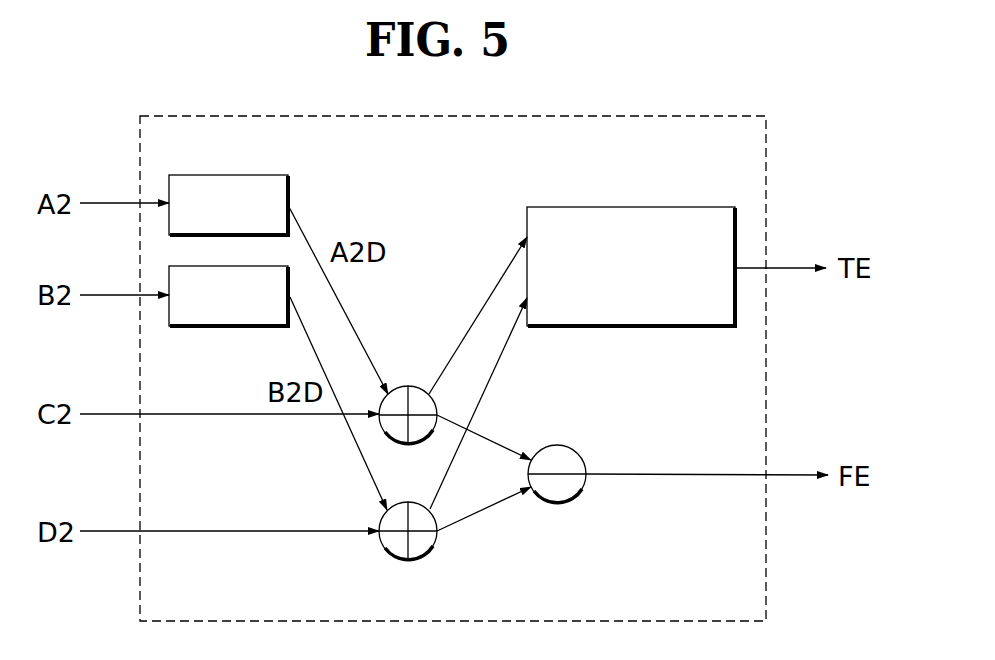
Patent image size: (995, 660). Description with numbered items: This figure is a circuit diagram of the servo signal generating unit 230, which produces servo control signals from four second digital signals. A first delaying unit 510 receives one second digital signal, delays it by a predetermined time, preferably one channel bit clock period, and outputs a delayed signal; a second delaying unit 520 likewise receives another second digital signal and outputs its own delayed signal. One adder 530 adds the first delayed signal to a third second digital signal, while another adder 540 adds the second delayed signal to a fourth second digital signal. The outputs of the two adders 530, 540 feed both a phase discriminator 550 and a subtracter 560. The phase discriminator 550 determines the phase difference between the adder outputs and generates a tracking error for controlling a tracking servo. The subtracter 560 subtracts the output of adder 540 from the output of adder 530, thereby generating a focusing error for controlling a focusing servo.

The servo signal generating unit 230 is at (767, 153).
The first delaying unit 510 is at (237, 174).
The second delaying unit 520 is at (230, 328).
The adder 530 is at (408, 385).
The adder 540 is at (433, 555).
The phase discriminator 550 is at (588, 205).
The subtracter 560 is at (562, 444).